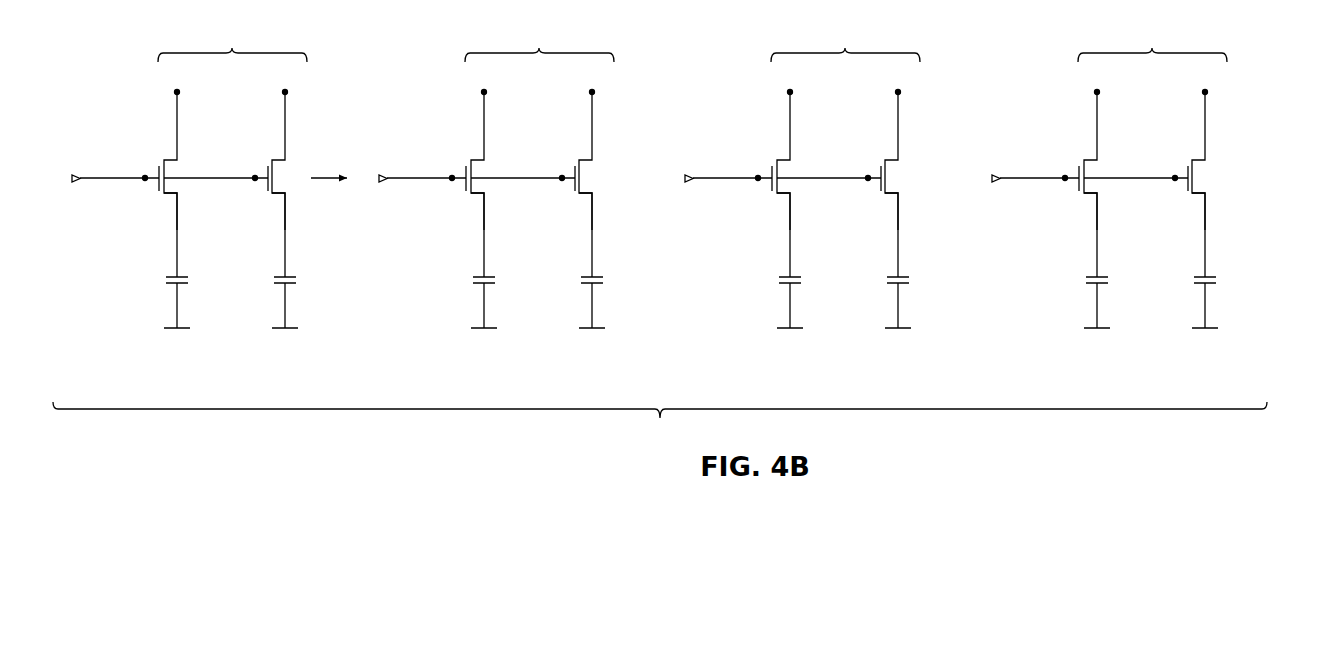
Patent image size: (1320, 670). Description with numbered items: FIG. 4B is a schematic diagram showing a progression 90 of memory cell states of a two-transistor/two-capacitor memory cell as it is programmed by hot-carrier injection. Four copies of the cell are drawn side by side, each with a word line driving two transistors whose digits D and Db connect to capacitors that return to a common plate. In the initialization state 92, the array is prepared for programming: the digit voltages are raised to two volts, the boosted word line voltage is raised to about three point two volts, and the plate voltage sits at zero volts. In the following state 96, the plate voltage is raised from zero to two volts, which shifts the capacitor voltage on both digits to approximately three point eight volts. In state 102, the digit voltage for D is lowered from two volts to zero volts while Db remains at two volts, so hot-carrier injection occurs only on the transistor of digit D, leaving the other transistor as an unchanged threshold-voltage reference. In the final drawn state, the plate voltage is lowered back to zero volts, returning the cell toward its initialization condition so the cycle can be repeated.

The progression of memory cell states 90 is at (660, 418).
The initialization state 92 is at (318, 77).
The state 96 is at (505, 202).
The state 102 is at (812, 202).